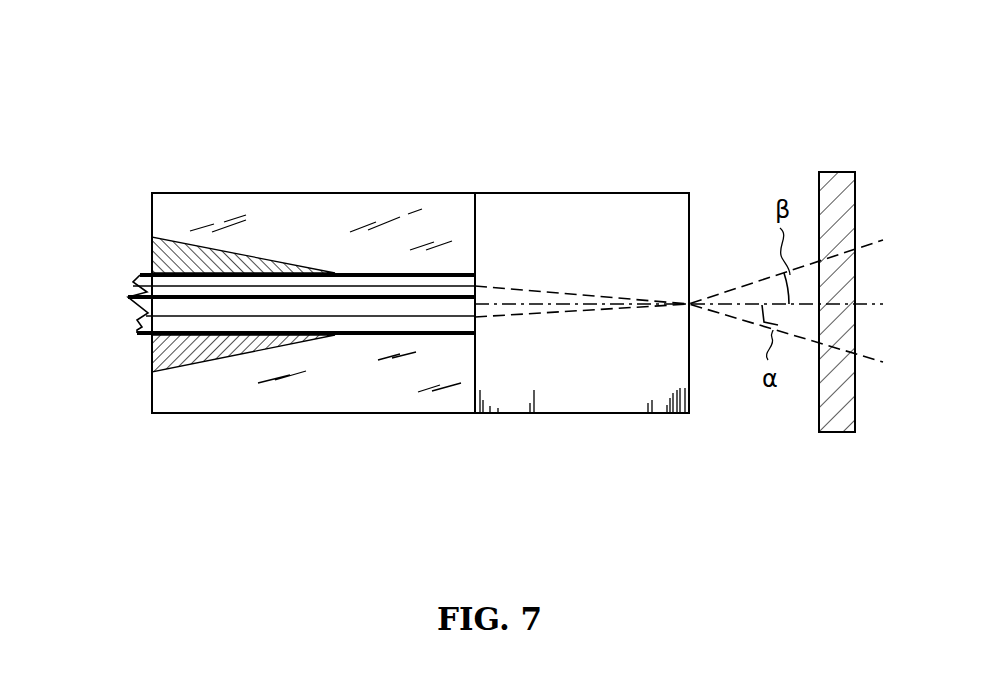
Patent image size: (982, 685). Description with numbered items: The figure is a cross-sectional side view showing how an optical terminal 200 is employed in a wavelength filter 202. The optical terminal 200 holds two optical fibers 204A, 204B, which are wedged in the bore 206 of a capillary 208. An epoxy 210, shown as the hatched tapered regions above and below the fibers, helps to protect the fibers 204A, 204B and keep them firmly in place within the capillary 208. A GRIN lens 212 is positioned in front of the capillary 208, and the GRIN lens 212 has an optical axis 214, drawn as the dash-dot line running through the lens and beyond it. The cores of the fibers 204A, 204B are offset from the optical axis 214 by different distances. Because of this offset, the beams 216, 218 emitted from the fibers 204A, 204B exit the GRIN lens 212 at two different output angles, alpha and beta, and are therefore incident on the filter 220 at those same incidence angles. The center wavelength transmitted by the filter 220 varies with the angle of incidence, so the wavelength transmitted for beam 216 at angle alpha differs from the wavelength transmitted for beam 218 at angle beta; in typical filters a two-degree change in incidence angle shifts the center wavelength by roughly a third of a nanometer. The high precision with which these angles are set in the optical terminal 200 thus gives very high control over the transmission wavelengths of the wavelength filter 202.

The optical terminal 200 is at (416, 453).
The wavelength filter 202 is at (450, 75).
The optical fiber 204A is at (137, 276).
The optical fiber 204B is at (136, 328).
The bore 206 is at (303, 270).
The capillary 208 is at (253, 413).
The epoxy 210 is at (152, 245).
The GRIN lens 212 is at (528, 193).
The optical axis 214 is at (533, 303).
The beam 216 is at (508, 285).
The beam 218 is at (570, 317).
The filter 220 is at (833, 434).